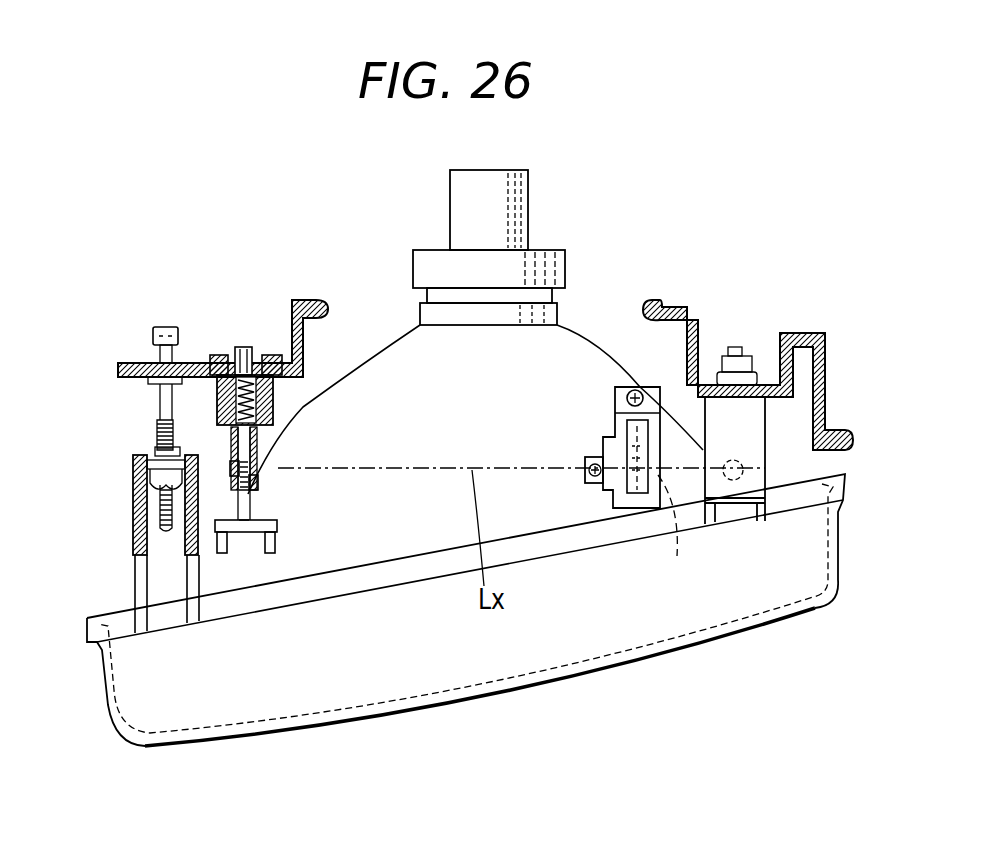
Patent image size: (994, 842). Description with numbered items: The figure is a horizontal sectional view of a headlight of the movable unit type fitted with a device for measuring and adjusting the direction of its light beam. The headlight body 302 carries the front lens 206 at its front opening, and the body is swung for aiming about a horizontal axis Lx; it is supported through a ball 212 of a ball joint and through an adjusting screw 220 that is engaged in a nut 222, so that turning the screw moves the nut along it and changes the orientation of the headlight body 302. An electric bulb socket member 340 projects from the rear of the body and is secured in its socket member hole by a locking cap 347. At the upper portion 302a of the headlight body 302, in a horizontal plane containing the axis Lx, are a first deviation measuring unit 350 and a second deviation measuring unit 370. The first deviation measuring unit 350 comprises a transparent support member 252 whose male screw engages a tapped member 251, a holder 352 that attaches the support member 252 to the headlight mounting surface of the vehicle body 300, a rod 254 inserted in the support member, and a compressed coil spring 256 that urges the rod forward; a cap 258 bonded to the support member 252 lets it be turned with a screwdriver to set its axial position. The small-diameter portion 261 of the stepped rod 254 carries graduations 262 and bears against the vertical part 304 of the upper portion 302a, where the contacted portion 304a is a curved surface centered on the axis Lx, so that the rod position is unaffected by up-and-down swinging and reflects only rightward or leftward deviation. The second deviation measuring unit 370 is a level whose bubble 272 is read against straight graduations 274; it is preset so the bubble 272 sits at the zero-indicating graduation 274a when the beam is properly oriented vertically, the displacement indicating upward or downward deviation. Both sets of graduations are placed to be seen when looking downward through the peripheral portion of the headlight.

The front lens 206 is at (453, 703).
The ball 212 is at (745, 467).
The adjusting screw 220 is at (122, 473).
The nut 222 is at (147, 487).
The tapped member 251 is at (273, 420).
The support member 252 is at (258, 438).
The rod 254 is at (258, 484).
The compressed coil spring 256 is at (255, 396).
The cap 258 is at (243, 347).
The small-diameter portion 261 is at (260, 503).
The graduations 262 is at (258, 472).
The bubble 272 is at (677, 556).
The straight graduations 274 is at (637, 512).
The zero-indicating graduation 274a is at (598, 485).
The vehicle body 300 is at (295, 292).
The headlight body 302 is at (383, 347).
The upper portion 302a is at (545, 368).
The vertical part 304 is at (277, 531).
The curved surface portion 304a is at (255, 535).
The electric bulb socket member 340 is at (543, 208).
The locking cap 347 is at (555, 250).
The first deviation measuring unit 350 is at (223, 445).
The holder 352 is at (213, 355).
The second deviation measuring unit 370 is at (597, 444).